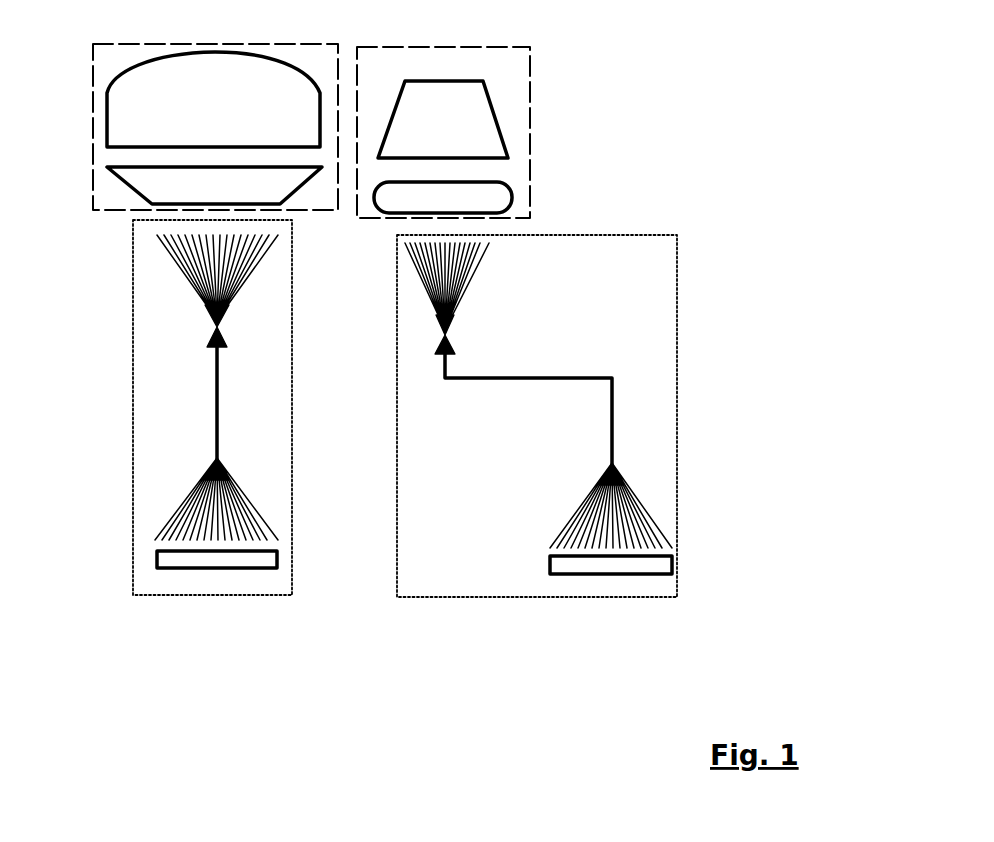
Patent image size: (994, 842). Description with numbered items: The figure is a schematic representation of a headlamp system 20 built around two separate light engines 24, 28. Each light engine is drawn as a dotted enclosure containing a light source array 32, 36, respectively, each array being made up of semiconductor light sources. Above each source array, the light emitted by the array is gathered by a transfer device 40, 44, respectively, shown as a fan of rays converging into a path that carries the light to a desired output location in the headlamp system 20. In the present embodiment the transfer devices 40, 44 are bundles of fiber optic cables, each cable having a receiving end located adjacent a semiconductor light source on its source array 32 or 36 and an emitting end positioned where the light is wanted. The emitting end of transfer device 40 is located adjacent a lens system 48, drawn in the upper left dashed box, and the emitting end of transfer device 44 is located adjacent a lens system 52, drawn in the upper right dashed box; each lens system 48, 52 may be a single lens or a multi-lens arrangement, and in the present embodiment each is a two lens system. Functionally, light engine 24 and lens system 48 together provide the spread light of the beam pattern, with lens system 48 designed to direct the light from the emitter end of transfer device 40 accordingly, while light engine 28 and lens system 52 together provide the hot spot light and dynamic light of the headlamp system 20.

The headlamp system 20 is at (648, 99).
The light engine 24 is at (132, 410).
The light engine 28 is at (678, 328).
The light source array 32 is at (183, 568).
The light source array 36 is at (625, 577).
The transfer device 40 is at (203, 415).
The transfer device 44 is at (618, 435).
The lens system 48 is at (92, 210).
The lens system 52 is at (531, 176).